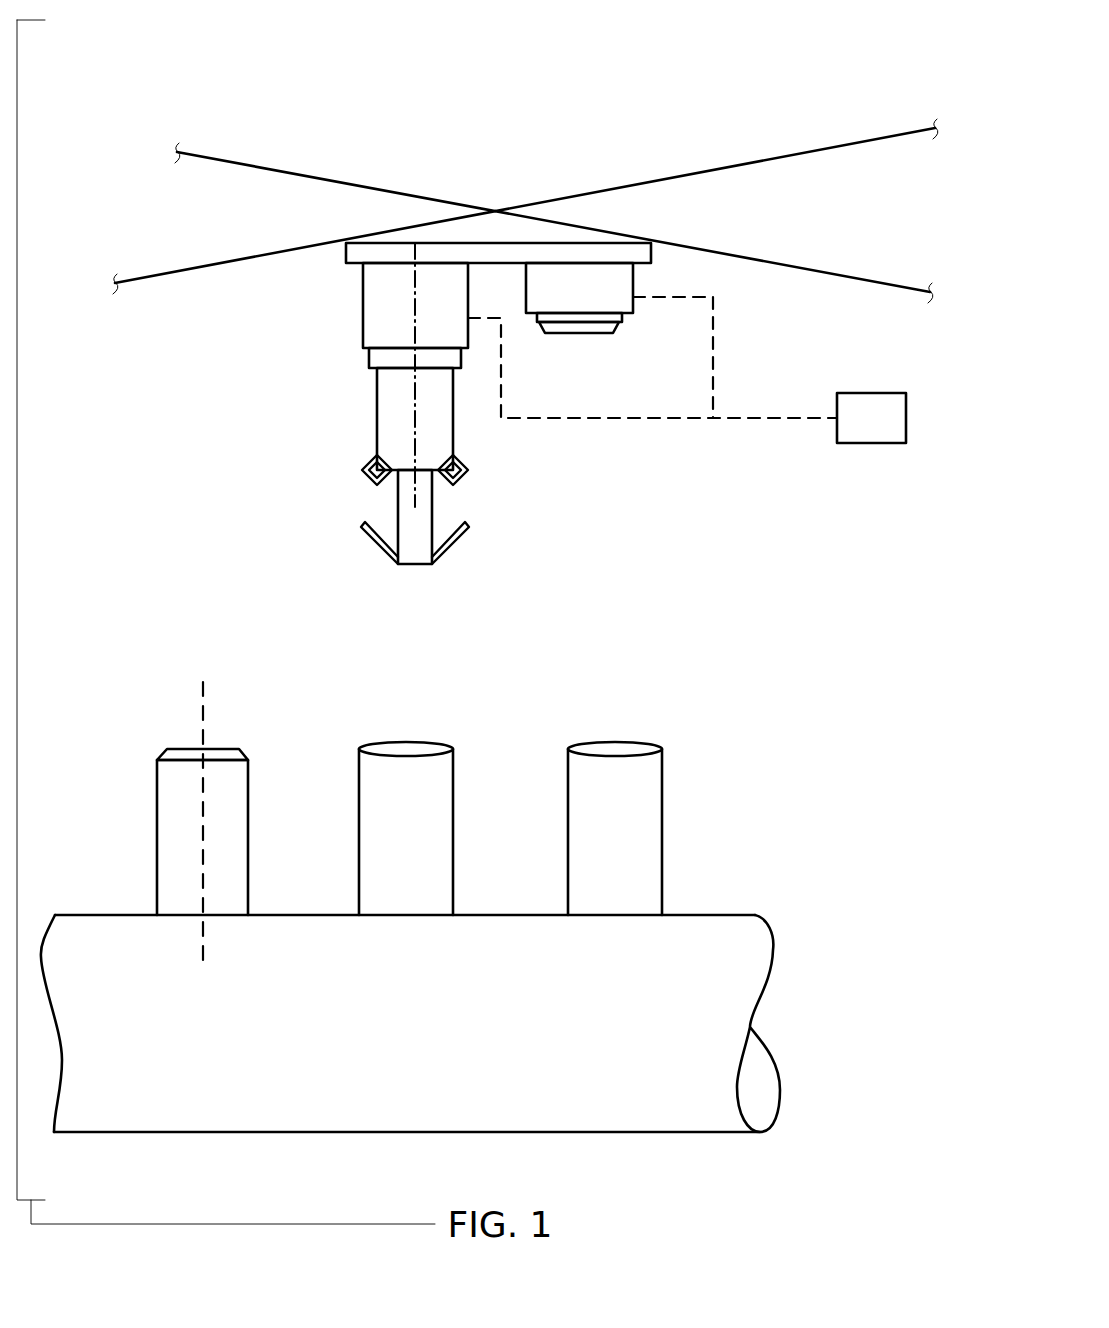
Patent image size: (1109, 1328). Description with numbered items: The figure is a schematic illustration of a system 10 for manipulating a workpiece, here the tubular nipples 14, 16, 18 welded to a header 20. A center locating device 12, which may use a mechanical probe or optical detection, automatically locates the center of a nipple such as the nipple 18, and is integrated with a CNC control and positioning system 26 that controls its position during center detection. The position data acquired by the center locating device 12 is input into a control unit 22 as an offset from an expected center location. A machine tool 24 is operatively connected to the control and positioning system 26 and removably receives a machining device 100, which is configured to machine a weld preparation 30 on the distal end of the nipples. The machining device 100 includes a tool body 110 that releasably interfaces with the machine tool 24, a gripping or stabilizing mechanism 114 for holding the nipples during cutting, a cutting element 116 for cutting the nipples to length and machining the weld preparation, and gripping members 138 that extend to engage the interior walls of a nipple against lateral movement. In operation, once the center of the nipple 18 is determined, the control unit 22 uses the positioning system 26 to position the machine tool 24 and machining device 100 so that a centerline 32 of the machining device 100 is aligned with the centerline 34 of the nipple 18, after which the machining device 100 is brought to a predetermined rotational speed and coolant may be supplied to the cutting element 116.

The system 10 is at (671, 58).
The control and positioning system 26 is at (601, 155).
The center locating device 12 is at (627, 283).
The machine tool 24 is at (336, 324).
The control unit 22 is at (871, 433).
The machining device 100 is at (398, 423).
The tool body 110 is at (392, 423).
The centerline 32 is at (412, 432).
The cutting element 116 is at (348, 482).
The gripping or stabilizing mechanism 114 is at (474, 552).
The gripping members 138 is at (378, 542).
The header 20 is at (630, 1115).
The nipple 18 is at (201, 821).
The weld preparation 30 is at (228, 757).
The centerline 34 is at (203, 790).
The nipple 16 is at (437, 838).
The nipple 14 is at (645, 820).